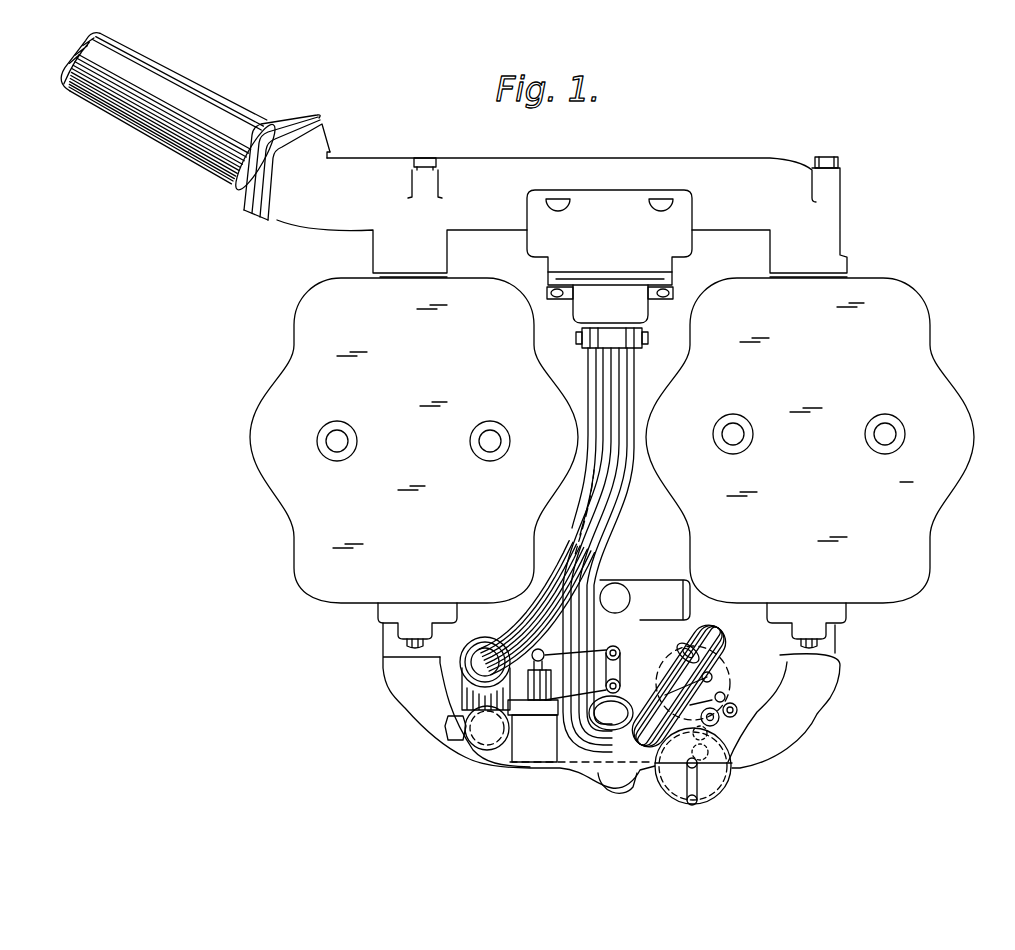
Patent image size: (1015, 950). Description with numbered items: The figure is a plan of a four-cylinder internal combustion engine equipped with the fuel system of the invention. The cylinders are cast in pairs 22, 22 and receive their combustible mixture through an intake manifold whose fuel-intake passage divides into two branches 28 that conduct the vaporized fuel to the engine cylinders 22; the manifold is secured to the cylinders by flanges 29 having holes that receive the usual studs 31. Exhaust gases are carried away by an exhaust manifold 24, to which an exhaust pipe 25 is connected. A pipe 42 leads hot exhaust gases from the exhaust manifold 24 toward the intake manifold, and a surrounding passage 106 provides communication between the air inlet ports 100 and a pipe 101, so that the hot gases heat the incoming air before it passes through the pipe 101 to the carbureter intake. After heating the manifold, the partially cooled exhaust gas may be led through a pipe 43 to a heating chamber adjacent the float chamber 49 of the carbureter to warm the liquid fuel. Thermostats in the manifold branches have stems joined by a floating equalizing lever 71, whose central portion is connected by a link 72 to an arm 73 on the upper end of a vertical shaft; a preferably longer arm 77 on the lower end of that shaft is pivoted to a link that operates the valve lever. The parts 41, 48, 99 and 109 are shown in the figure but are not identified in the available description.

The engine cylinders 22 is at (308, 318).
The exhaust manifold 24 is at (611, 162).
The exhaust pipe 25 is at (195, 87).
The branches 28 is at (432, 738).
The flanges 29 is at (390, 615).
The studs 31 is at (405, 645).
The lower casing 41 is at (642, 783).
The pipe 42 is at (583, 555).
The pipe 43 is at (727, 647).
The crank pin 48 is at (717, 773).
The float chamber 49 is at (718, 677).
The equalizing lever 71 is at (590, 650).
The link 72 is at (622, 652).
The arm 73 is at (611, 713).
The arm 77 is at (643, 640).
The junction box 99 is at (653, 241).
The air inlet ports 100 is at (552, 198).
The pipe 101 is at (533, 572).
The surrounding passage 106 is at (467, 610).
The cable sheath 109 is at (513, 598).